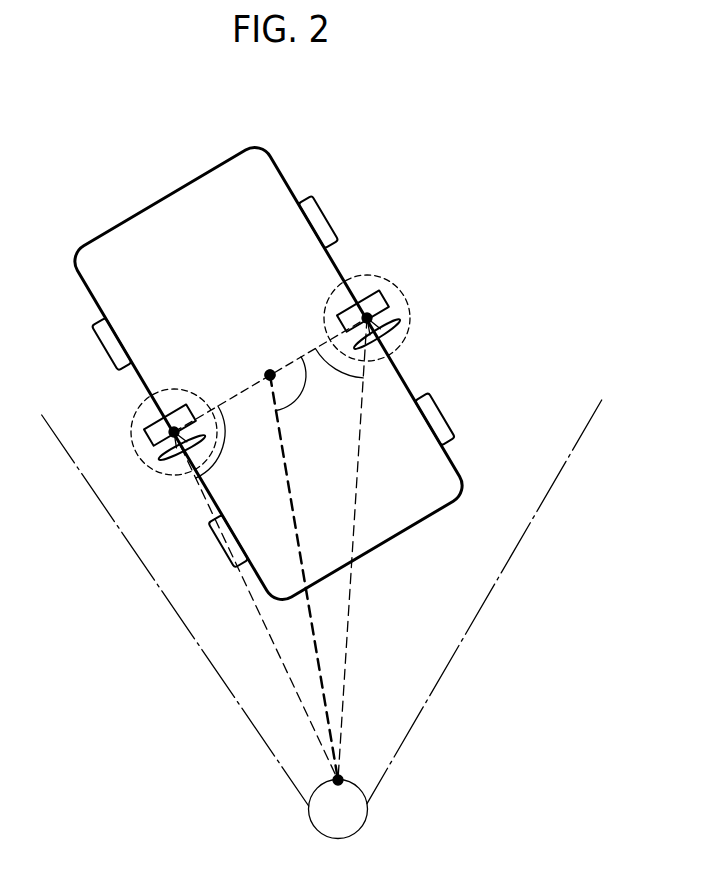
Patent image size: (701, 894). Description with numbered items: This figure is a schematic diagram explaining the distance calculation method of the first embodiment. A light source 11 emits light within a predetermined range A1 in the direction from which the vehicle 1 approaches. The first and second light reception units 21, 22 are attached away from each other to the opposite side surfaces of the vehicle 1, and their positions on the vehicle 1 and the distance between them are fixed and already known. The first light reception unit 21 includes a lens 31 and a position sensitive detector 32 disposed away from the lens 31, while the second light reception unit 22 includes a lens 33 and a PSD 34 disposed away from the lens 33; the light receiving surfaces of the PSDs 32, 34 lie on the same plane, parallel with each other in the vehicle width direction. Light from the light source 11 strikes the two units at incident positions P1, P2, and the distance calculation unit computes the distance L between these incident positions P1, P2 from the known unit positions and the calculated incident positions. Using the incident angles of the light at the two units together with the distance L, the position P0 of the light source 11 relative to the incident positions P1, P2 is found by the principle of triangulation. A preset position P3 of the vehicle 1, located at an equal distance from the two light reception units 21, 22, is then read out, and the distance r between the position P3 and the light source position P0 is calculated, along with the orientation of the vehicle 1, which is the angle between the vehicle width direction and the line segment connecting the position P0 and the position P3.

The vehicle 1 is at (282, 172).
The light source 11 is at (357, 832).
The first light reception unit 21 is at (387, 275).
The second light reception unit 22 is at (180, 387).
The lens 31 is at (397, 340).
The position sensitive detector (PSD) 32 is at (398, 296).
The lens 33 is at (177, 460).
The PSD 34 is at (133, 447).
The predetermined range A1 is at (485, 602).
The position of the light source P0 is at (342, 778).
The incident position of the light P1 is at (380, 313).
The incident position of the light P2 is at (143, 416).
The position of the vehicle P3 is at (270, 375).
The distance between the incident positions L is at (255, 376).
The distance r is at (304, 577).